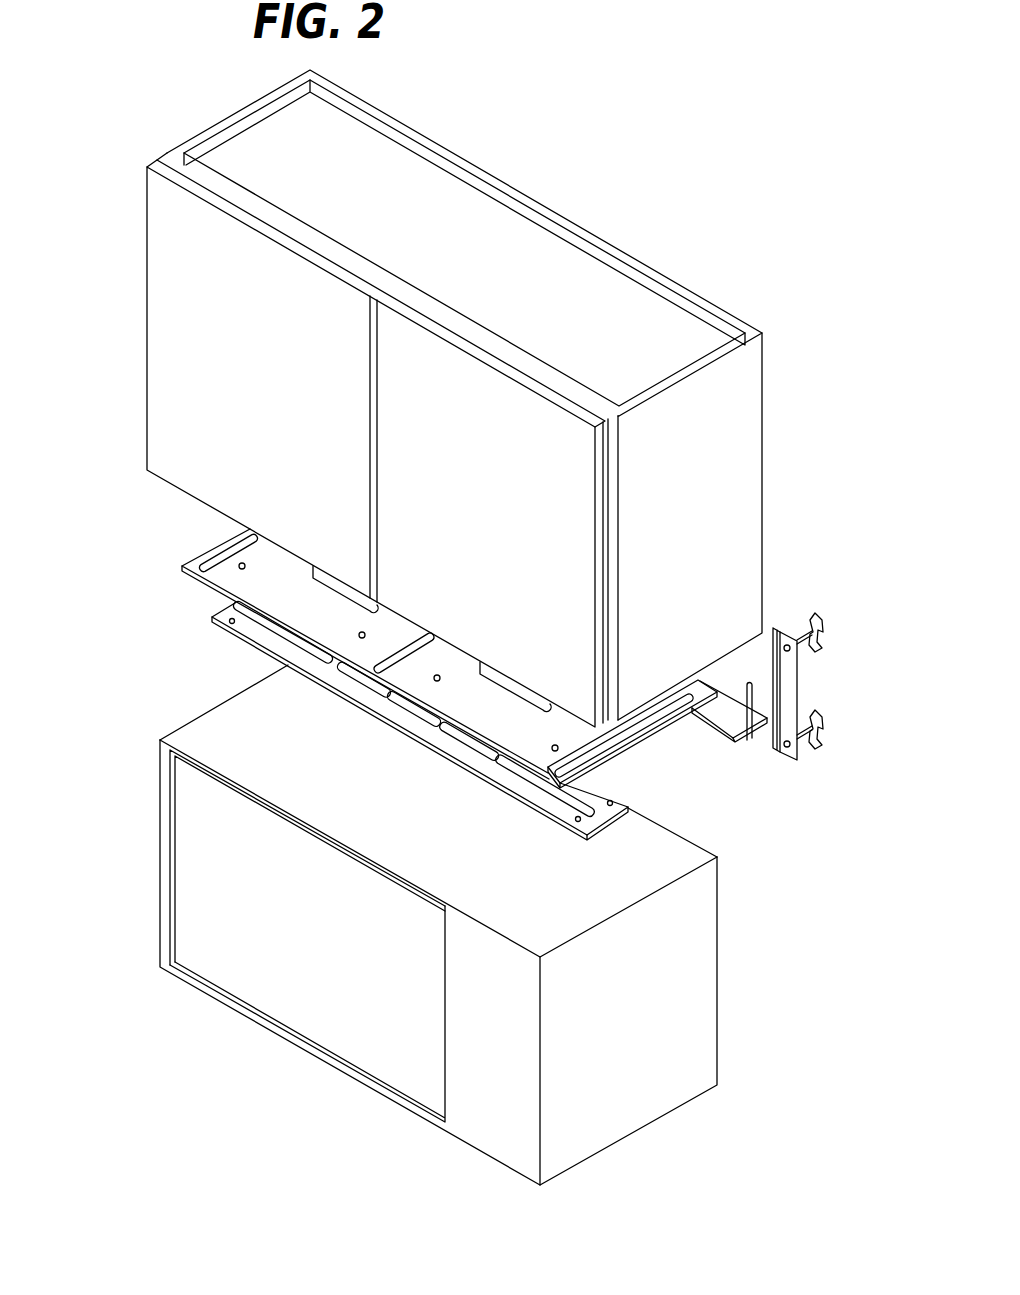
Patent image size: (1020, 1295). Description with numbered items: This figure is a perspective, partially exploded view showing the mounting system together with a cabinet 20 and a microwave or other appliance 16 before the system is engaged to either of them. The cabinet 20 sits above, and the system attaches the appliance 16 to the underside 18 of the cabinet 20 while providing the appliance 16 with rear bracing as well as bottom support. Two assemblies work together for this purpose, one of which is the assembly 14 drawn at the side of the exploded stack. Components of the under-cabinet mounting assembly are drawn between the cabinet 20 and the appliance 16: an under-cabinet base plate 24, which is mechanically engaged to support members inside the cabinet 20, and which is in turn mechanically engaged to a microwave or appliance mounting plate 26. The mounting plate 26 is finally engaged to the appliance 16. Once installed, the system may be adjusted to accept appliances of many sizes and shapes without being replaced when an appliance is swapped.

The assembly 14 is at (798, 682).
The microwave or other appliance 16 is at (698, 973).
The underside of the cabinet 18 is at (160, 495).
The cabinet 20 is at (762, 460).
The under-cabinet base plate 24 is at (647, 740).
The microwave or appliance mounting plate 26 is at (212, 617).